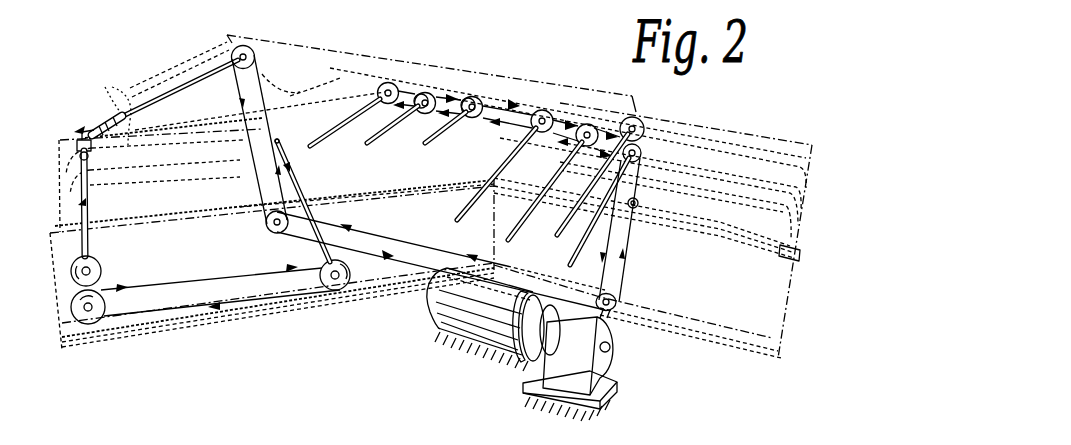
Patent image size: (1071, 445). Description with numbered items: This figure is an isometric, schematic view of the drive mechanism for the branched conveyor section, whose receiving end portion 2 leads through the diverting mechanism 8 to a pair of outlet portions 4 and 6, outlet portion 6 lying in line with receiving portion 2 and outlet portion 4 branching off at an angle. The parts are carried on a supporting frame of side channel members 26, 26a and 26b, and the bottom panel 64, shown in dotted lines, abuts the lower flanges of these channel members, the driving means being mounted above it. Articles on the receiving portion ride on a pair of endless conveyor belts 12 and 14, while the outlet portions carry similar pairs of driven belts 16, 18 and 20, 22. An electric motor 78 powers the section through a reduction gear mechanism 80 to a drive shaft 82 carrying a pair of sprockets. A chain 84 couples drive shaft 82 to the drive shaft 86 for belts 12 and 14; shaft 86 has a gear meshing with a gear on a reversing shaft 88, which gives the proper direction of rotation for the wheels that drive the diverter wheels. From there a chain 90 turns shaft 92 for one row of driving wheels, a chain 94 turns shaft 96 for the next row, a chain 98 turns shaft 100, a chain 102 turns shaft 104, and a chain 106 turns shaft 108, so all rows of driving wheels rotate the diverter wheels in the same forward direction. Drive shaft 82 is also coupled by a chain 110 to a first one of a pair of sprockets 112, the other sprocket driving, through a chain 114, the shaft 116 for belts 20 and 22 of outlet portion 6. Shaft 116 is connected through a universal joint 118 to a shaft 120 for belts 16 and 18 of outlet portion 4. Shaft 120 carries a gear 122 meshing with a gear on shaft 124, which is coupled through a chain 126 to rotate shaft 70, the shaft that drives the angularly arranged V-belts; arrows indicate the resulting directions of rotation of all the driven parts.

The receiving end portion 2 is at (775, 114).
The outlet portion 4 is at (192, 352).
The outlet portion 6 is at (301, 21).
The diverting mechanism 8 is at (395, 178).
The endless conveyor belt 12 is at (712, 214).
The endless conveyor belt 14 is at (738, 174).
The endless belt 16 is at (165, 192).
The endless belt 18 is at (166, 155).
The endless belt 20 is at (160, 80).
The endless belt 22 is at (203, 63).
The side channel member 26 is at (368, 272).
The side channel member 26a is at (715, 127).
The side channel member 26b is at (109, 106).
The bottom panel 64 is at (730, 343).
The shaft 70 is at (305, 195).
The electric motor 78 is at (435, 319).
The reduction gear mechanism 80 is at (595, 376).
The drive shaft 82 is at (605, 318).
The chain 84 is at (621, 273).
The drive shaft 86 is at (572, 215).
The reversing shaft 88 is at (565, 264).
The chain 90 is at (617, 122).
The shaft 92 is at (522, 228).
The chain 94 is at (560, 113).
The shaft 96 is at (498, 163).
The chain 98 is at (511, 125).
The shaft 100 is at (428, 143).
The chain 102 is at (437, 92).
The shaft 104 is at (378, 130).
The chain 106 is at (402, 87).
The shaft 108 is at (345, 133).
The chain 110 is at (441, 261).
The pair of sprockets 112 is at (266, 228).
The chain 114 is at (270, 135).
The shaft 116 is at (226, 64).
The universal joint 118 is at (102, 115).
The shaft 120 is at (86, 204).
The gear 122 is at (100, 268).
The shaft 124 is at (97, 304).
The chain 126 is at (226, 269).